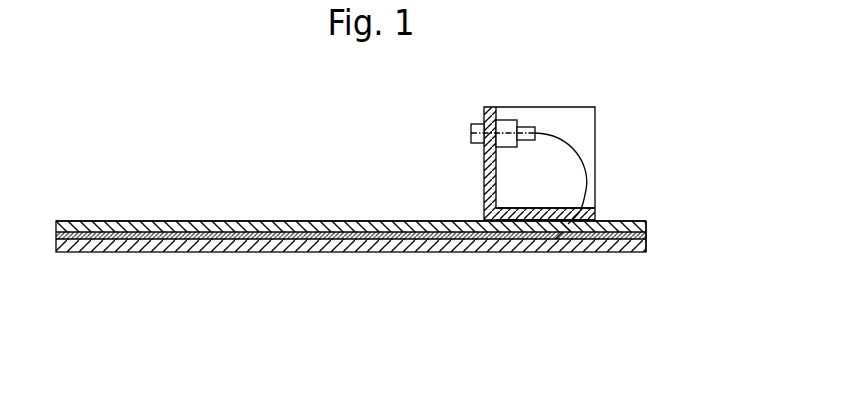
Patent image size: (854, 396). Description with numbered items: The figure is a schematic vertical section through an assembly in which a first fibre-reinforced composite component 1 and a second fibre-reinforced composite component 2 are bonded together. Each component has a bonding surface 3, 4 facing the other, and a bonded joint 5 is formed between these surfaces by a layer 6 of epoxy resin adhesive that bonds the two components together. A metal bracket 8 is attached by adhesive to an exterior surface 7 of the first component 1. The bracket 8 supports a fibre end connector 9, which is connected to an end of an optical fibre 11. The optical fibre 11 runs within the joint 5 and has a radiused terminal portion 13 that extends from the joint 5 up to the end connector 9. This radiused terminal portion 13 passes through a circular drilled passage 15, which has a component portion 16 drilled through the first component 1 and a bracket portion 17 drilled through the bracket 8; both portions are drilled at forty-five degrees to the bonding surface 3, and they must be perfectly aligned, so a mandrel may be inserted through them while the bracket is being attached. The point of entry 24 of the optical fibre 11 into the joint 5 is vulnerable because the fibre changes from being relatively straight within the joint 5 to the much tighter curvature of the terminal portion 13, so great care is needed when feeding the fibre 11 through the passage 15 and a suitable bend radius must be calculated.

The first fibre-reinforced composite component 1 is at (638, 221).
The second fibre-reinforced composite component 2 is at (629, 247).
The bonding surface of first component 3 is at (600, 237).
The bonding surface of second component 4 is at (612, 237).
The bonded joint 5 is at (646, 236).
The layer of epoxy resin adhesive 6 is at (104, 238).
The exterior surface 7 is at (97, 221).
The metal bracket 8 is at (490, 112).
The fibre end connector 9 is at (508, 128).
The optical fibre 11 is at (256, 231).
The radiused terminal portion 13 is at (570, 143).
The circular drilled passage 15 is at (560, 219).
The component portion 16 is at (562, 226).
The bracket portion 17 is at (568, 208).
The point of entry 24 is at (557, 232).